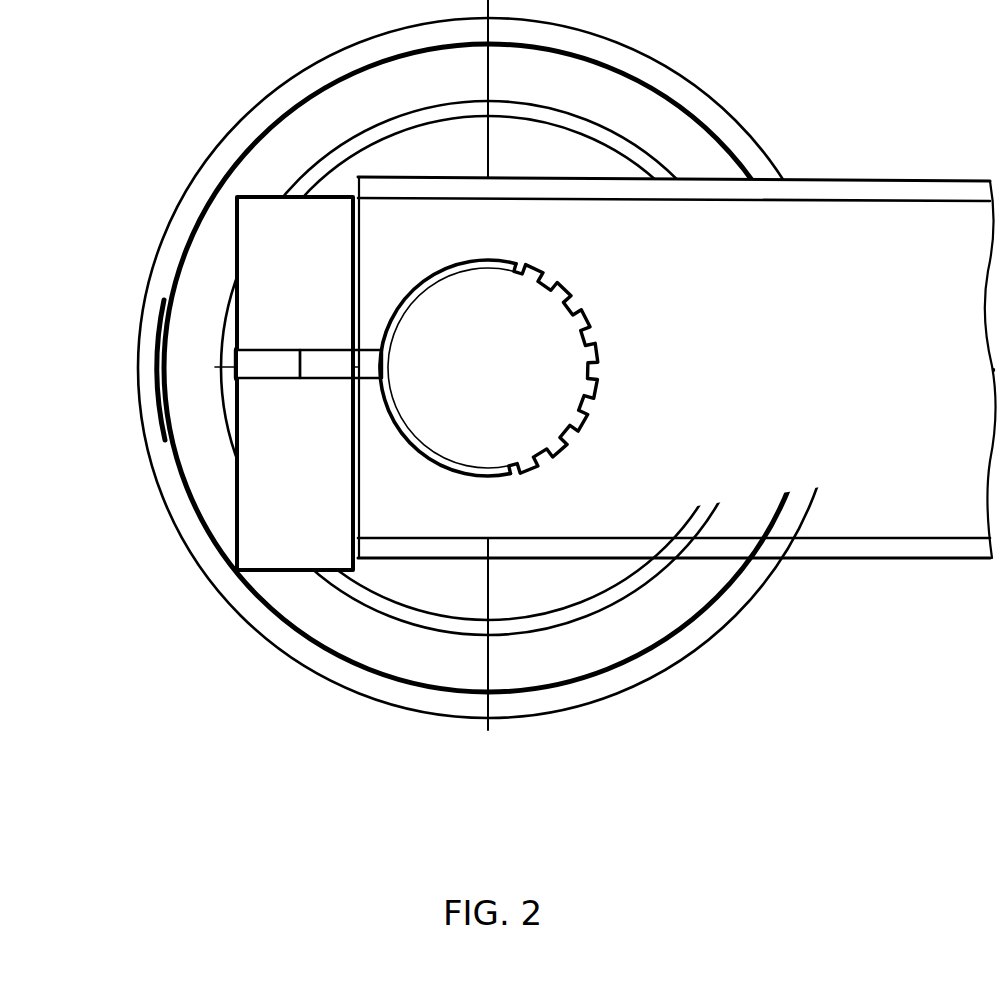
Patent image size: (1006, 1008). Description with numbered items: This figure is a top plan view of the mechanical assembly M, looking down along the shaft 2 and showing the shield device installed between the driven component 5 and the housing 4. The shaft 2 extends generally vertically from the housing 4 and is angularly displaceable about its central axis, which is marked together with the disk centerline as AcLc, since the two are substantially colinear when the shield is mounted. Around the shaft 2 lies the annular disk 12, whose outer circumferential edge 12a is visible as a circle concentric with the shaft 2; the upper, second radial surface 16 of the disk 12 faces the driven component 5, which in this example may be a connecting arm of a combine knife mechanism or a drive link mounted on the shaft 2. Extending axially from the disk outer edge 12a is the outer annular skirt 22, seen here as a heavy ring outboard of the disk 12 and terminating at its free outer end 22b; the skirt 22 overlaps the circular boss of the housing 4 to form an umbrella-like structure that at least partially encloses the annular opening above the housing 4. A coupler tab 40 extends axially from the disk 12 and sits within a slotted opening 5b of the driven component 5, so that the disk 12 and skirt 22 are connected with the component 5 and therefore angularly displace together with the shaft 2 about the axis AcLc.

The mechanical assembly M is at (803, 78).
The driven component 5 is at (863, 170).
The slotted opening 5b is at (278, 374).
The second radial surface 16 is at (548, 161).
The shaft 2 is at (570, 298).
The central axis and disk centerline AcLc is at (484, 358).
The coupler tab 40 is at (322, 342).
The outer annular skirt 22 is at (178, 349).
The outer end 22b is at (165, 440).
The annular disk 12 is at (400, 596).
The outer circumferential edge 12a is at (550, 617).
The housing 4 is at (432, 702).